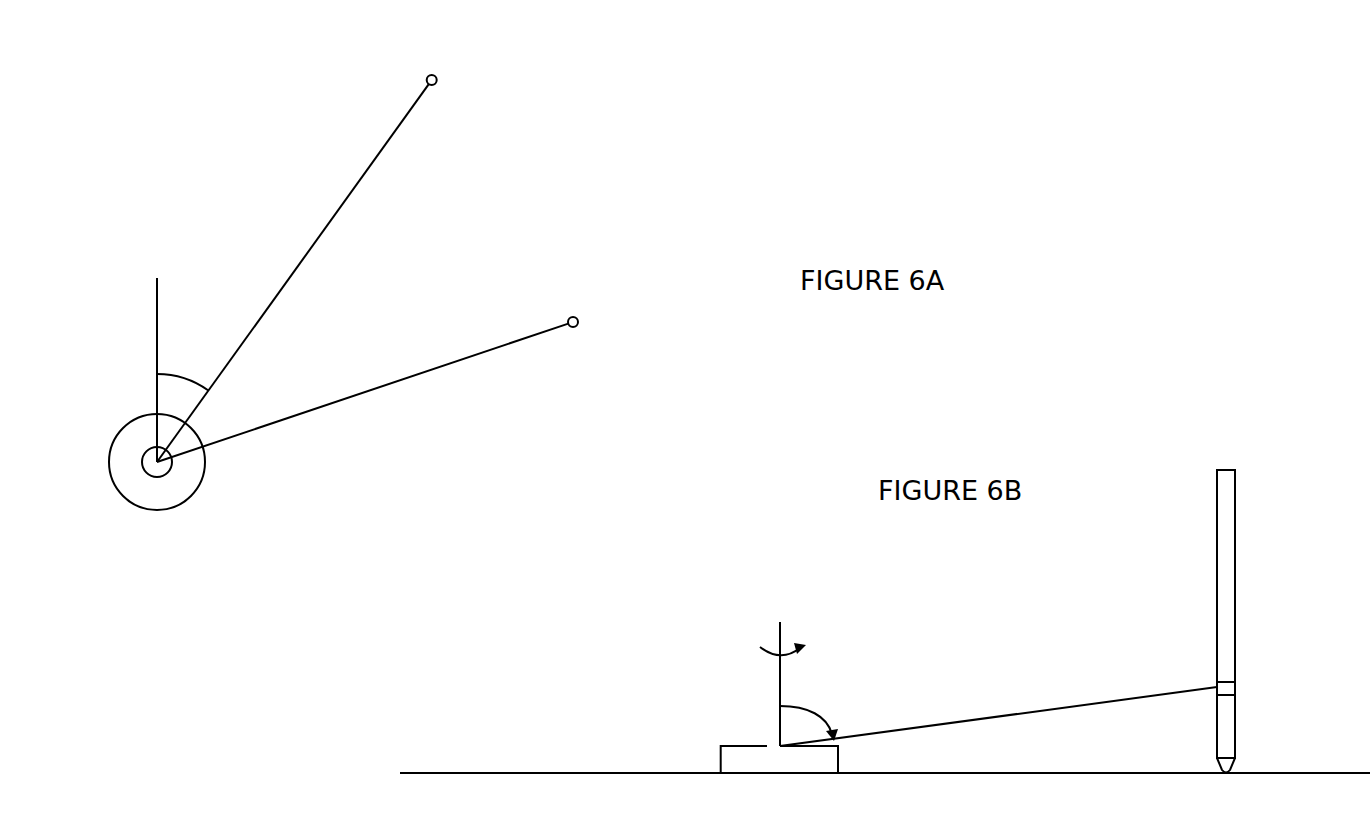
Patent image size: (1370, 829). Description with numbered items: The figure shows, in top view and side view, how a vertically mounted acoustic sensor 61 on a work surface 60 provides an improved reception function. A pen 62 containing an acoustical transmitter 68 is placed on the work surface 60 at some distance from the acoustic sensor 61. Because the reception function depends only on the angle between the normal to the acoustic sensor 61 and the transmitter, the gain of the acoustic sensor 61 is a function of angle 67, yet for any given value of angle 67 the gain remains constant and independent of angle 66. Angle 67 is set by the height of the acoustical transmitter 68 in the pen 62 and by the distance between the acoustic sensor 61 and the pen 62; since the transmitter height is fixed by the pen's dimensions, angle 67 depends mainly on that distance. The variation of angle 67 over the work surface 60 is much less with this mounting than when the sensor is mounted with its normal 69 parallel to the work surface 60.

In FIG. 6A, the work surface 60 is at (741, 158).
In FIG. 6B, the work surface 60 is at (552, 773).
In FIG. 6A, the acoustic sensor 61 is at (153, 510).
In FIG. 6B, the acoustic sensor 61 is at (742, 746).
In FIG. 6A, the pen 62 is at (436, 76).
In FIG. 6B, the pen 62 is at (1222, 567).
In FIG. 6A, the angle 66 is at (192, 368).
In FIG. 6B, the angle 66 is at (767, 645).
In FIG. 6B, the angle 67 is at (802, 703).
In FIG. 6B, the acoustical transmitter 68 is at (1227, 689).
In FIG. 6B, the normal 69 is at (782, 632).